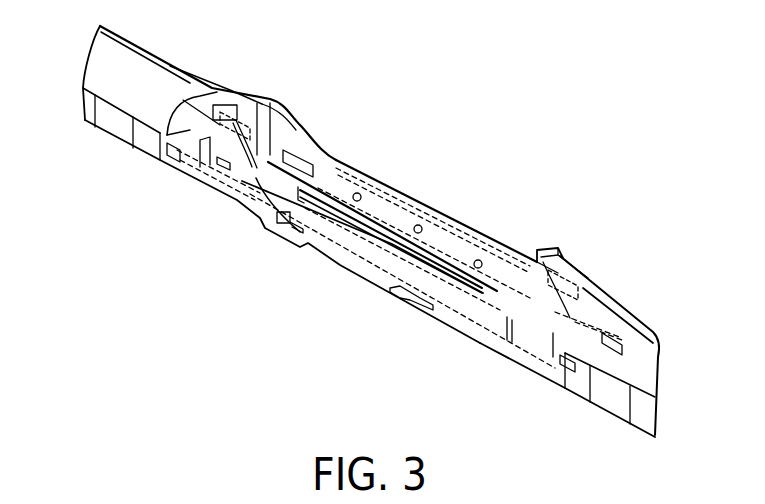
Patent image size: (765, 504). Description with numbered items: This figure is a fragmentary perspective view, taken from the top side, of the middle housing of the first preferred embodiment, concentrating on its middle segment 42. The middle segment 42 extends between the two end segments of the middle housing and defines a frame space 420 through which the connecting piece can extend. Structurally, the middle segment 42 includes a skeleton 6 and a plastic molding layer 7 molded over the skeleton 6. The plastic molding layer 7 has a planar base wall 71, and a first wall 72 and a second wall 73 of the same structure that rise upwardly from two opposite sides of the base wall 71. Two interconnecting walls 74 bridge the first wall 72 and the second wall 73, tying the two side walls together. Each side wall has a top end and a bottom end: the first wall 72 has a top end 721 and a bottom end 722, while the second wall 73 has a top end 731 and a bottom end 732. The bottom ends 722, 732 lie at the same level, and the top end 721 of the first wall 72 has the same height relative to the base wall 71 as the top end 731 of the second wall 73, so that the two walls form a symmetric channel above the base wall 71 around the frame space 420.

The plastic molding layer 7 is at (299, 115).
The first wall 72 is at (351, 161).
The top end of first wall 721 is at (383, 187).
The bottom end of first wall 722 is at (453, 260).
The frame space 420 is at (393, 233).
The middle segment 42 is at (519, 208).
The interconnecting wall 74 is at (244, 105).
The base wall 71 is at (260, 180).
The second wall 73 is at (318, 232).
The top end of second wall 731 is at (363, 240).
The bottom end of second wall 732 is at (367, 283).
The skeleton 6 is at (498, 352).